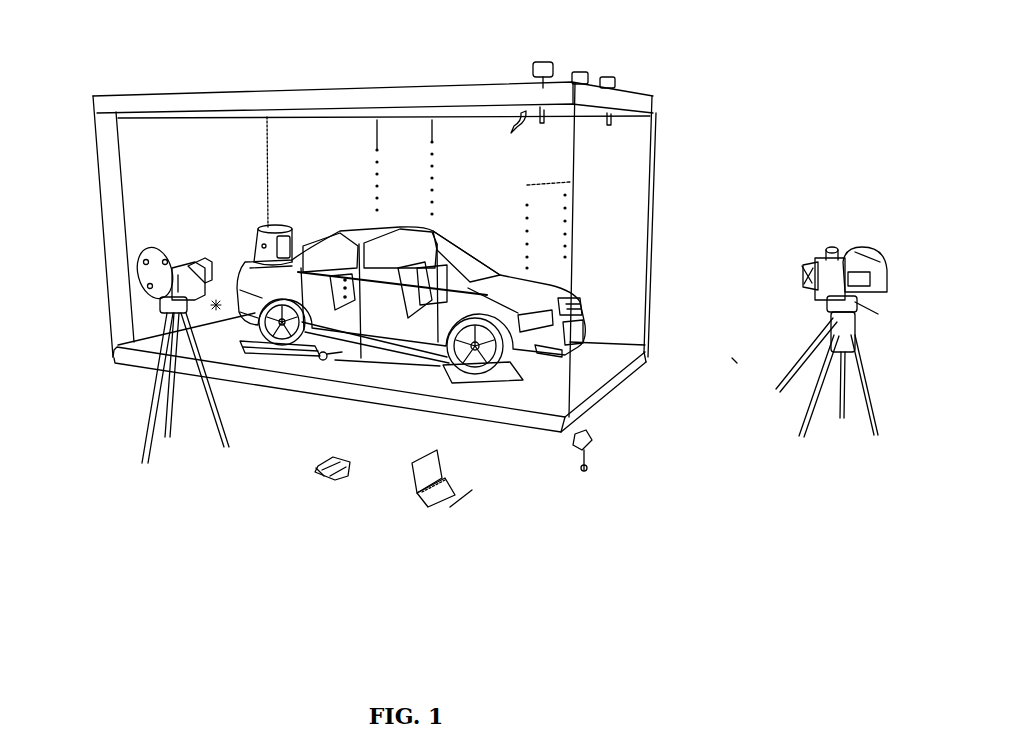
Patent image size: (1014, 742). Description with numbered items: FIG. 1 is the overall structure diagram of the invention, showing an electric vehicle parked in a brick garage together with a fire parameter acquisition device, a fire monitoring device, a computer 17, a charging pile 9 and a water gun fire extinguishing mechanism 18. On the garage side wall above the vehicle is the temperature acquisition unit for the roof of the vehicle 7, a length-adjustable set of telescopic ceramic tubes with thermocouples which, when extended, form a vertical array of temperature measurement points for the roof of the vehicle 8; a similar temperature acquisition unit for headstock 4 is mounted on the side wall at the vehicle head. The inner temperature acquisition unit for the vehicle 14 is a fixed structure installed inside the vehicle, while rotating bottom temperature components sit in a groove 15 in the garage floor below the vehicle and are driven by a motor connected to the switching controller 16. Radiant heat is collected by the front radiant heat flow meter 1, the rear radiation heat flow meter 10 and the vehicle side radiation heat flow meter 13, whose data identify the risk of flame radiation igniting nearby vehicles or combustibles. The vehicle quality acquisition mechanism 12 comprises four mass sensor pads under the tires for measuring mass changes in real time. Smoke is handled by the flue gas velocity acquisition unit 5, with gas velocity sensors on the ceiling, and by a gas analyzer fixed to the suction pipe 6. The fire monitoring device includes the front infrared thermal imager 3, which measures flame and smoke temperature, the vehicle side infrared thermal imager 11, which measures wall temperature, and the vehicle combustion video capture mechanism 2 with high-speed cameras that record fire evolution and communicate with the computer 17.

The front radiant heat flow meter 1 is at (733, 360).
The vehicle combustion video capture mechanism 2 is at (832, 252).
The front infrared thermal imager 3 is at (868, 278).
The temperature acquisition unit for headstock 4 is at (568, 212).
The flue gas velocity acquisition unit 5 is at (578, 78).
The suction pipe 6 is at (520, 124).
The temperature acquisition unit for the roof of the vehicle 7 is at (432, 140).
The temperature measurement point for the roof of the vehicle 8 is at (377, 147).
The charging pile 9 is at (256, 238).
The rear radiation heat flow meter 10 is at (213, 304).
The vehicle side infrared thermal imager 11 is at (157, 292).
The vehicle quality acquisition mechanism 12 is at (283, 352).
The vehicle side radiation heat flow meter 13 is at (325, 359).
The inner temperature acquisition unit for the vehicle 14 is at (391, 292).
The groove 15 is at (403, 358).
The switching controller 16 is at (323, 468).
The computer 17 is at (427, 484).
The water gun fire extinguishing mechanism 18 is at (580, 452).